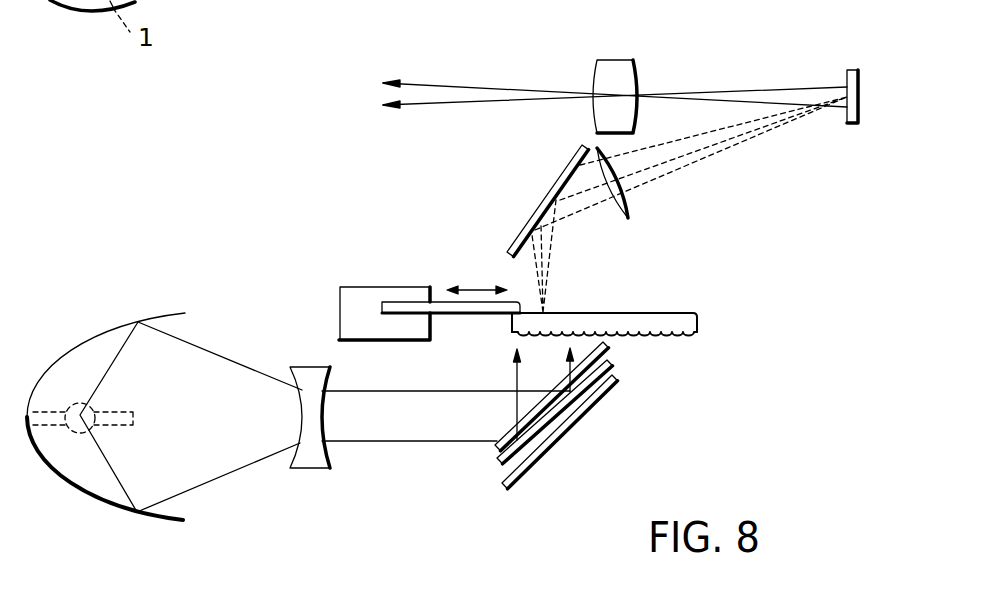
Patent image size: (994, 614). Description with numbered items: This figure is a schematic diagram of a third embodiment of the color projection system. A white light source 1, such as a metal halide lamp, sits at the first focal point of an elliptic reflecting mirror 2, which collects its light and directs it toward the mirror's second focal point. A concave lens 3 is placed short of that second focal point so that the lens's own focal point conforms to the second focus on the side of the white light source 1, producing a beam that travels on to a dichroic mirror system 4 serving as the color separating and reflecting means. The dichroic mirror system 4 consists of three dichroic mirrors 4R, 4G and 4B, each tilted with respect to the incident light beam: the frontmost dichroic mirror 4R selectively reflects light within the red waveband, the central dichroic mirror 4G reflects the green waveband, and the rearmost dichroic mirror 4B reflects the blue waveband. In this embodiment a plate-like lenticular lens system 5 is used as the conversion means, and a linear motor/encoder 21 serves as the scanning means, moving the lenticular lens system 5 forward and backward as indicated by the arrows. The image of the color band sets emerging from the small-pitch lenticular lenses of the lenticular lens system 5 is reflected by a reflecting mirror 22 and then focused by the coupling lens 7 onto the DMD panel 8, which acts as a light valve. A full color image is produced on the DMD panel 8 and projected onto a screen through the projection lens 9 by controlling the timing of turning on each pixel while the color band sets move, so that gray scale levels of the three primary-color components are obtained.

The white light source 1 is at (74, 435).
The elliptic reflecting mirror 2 is at (108, 330).
The concave lens 3 is at (305, 367).
The dichroic mirror system 4 is at (554, 420).
The dichroic mirror 4R is at (610, 344).
The dichroic mirror 4G is at (498, 463).
The dichroic mirror 4B is at (538, 470).
The lenticular lens system 5 is at (700, 320).
The coupling lens 7 is at (632, 213).
The DMD panel 8 is at (852, 70).
The projection lens 9 is at (613, 59).
The linear motor/encoder 21 is at (402, 287).
The reflecting mirror 22 is at (540, 203).